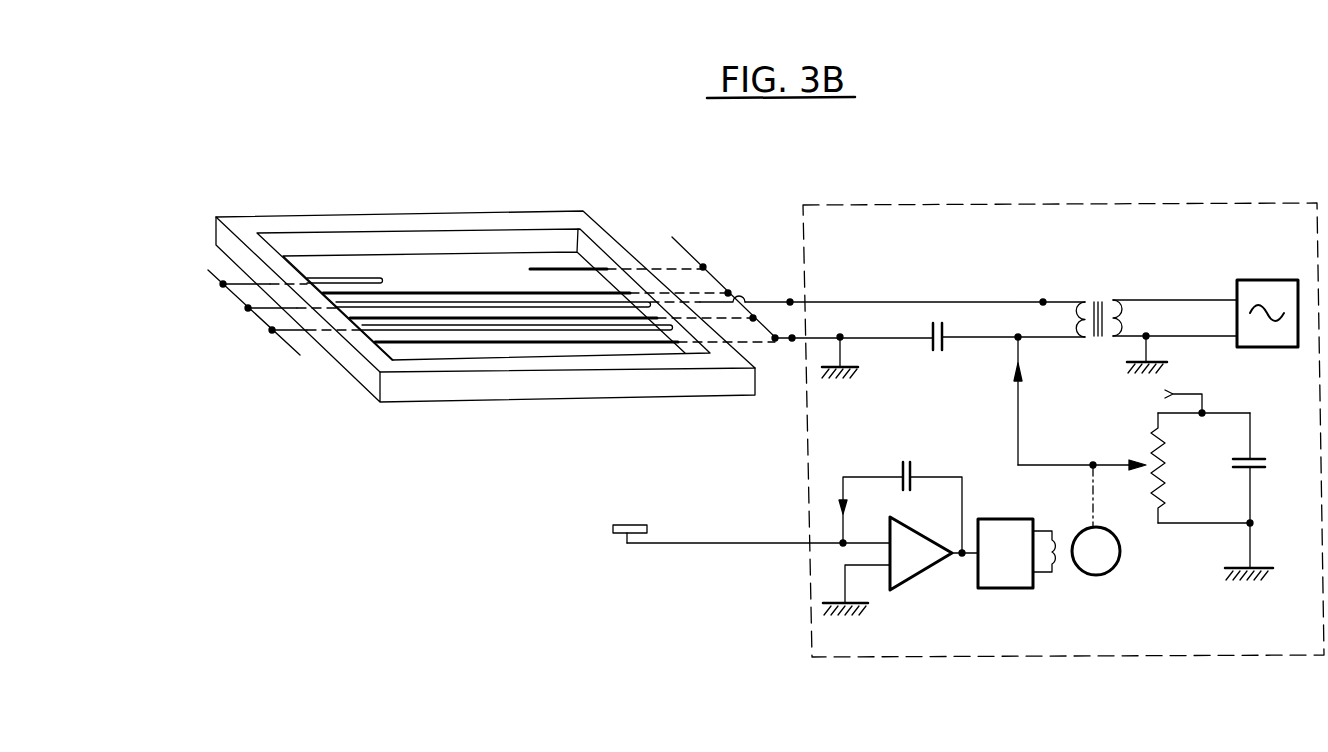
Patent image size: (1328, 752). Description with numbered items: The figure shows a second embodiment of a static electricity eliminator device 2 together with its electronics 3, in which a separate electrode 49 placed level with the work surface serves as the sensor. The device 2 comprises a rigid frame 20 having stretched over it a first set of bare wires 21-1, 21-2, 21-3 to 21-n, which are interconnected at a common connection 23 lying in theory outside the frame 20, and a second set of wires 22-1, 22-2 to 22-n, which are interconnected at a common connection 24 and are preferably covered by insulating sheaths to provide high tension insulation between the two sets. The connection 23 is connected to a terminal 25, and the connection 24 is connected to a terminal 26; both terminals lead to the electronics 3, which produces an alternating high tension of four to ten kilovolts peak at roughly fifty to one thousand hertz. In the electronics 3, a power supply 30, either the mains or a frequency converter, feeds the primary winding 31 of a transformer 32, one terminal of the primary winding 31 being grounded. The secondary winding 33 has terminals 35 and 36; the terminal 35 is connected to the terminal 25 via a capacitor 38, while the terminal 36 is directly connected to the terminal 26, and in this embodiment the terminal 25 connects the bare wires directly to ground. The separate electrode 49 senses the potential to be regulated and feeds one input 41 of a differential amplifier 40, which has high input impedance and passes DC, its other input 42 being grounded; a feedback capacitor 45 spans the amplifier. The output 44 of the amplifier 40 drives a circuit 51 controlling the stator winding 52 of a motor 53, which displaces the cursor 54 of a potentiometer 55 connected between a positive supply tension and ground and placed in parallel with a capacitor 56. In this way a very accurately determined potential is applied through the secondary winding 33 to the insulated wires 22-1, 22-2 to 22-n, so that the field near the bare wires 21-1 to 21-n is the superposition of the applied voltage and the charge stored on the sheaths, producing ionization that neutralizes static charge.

The static electricity eliminator device 2 is at (433, 190).
The electronics 3 is at (1105, 202).
The rigid frame 20 is at (242, 227).
The wire of first set 21-n is at (552, 268).
The wire of first set 21-1 is at (412, 345).
The wire of first set 21-2 is at (517, 320).
The wire of first set 21-3 is at (608, 293).
The wire of second set 22-n is at (330, 282).
The wire of second set 22-1 is at (460, 330).
The wire of second set 22-2 is at (565, 303).
The connection common to first set of wires 23 is at (715, 282).
The connection common to second set of wires 24 is at (245, 310).
The terminal 25 is at (792, 340).
The terminal 26 is at (790, 300).
The power supply 30 is at (1281, 285).
The primary winding 31 is at (1113, 300).
The transformer 32 is at (1118, 338).
The secondary winding 33 is at (1085, 299).
The terminal of secondary winding 35 is at (1018, 340).
The terminal of secondary winding 36 is at (1043, 302).
The capacitor 38 is at (937, 353).
The differential amplifier 40 is at (917, 562).
The input of amplifier 41 is at (885, 536).
The other input of amplifier 42 is at (888, 572).
The output of amplifier 44 is at (955, 558).
The feedback capacitor 45 is at (910, 462).
The separate electrode 49 is at (647, 530).
The control circuit 51 is at (1009, 578).
The stator winding 52 is at (1063, 572).
The motor 53 is at (1118, 562).
The cursor 54 is at (1139, 460).
The potentiometer 55 is at (1164, 464).
The capacitor 56 is at (1267, 467).